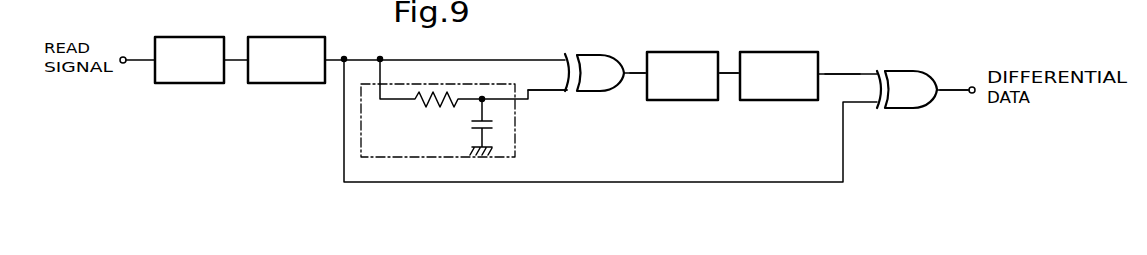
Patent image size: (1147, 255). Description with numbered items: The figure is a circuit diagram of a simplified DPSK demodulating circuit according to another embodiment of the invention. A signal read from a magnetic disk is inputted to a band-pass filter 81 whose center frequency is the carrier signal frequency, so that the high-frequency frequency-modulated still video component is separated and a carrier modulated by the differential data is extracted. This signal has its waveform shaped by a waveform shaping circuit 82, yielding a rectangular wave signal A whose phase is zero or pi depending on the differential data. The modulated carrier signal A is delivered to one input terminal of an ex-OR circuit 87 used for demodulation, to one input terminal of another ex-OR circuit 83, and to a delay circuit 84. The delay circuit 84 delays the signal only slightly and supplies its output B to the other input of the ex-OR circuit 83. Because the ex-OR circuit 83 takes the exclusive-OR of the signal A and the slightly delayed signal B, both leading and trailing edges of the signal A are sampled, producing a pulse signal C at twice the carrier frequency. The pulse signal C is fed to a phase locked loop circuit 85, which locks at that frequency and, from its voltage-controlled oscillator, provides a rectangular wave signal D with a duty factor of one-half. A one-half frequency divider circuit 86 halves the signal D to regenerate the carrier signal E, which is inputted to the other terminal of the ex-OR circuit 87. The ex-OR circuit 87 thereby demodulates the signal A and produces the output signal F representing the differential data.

The band-pass filter 81 is at (203, 37).
The waveform shaping circuit 82 is at (267, 37).
The ex-OR circuit 83 is at (603, 55).
The delay circuit 84 is at (515, 150).
The phase locked loop (PLL) circuit 85 is at (700, 52).
The ½ frequency divider circuit 86 is at (790, 52).
The ex-OR circuit 87 is at (912, 71).
The rectangular wave signal A is at (344, 57).
The delayed signal B is at (558, 95).
The pulse signal C is at (637, 70).
The rectangular wave signal D is at (731, 70).
The carrier signal E is at (839, 72).
The demodulated differential data signal F is at (946, 89).